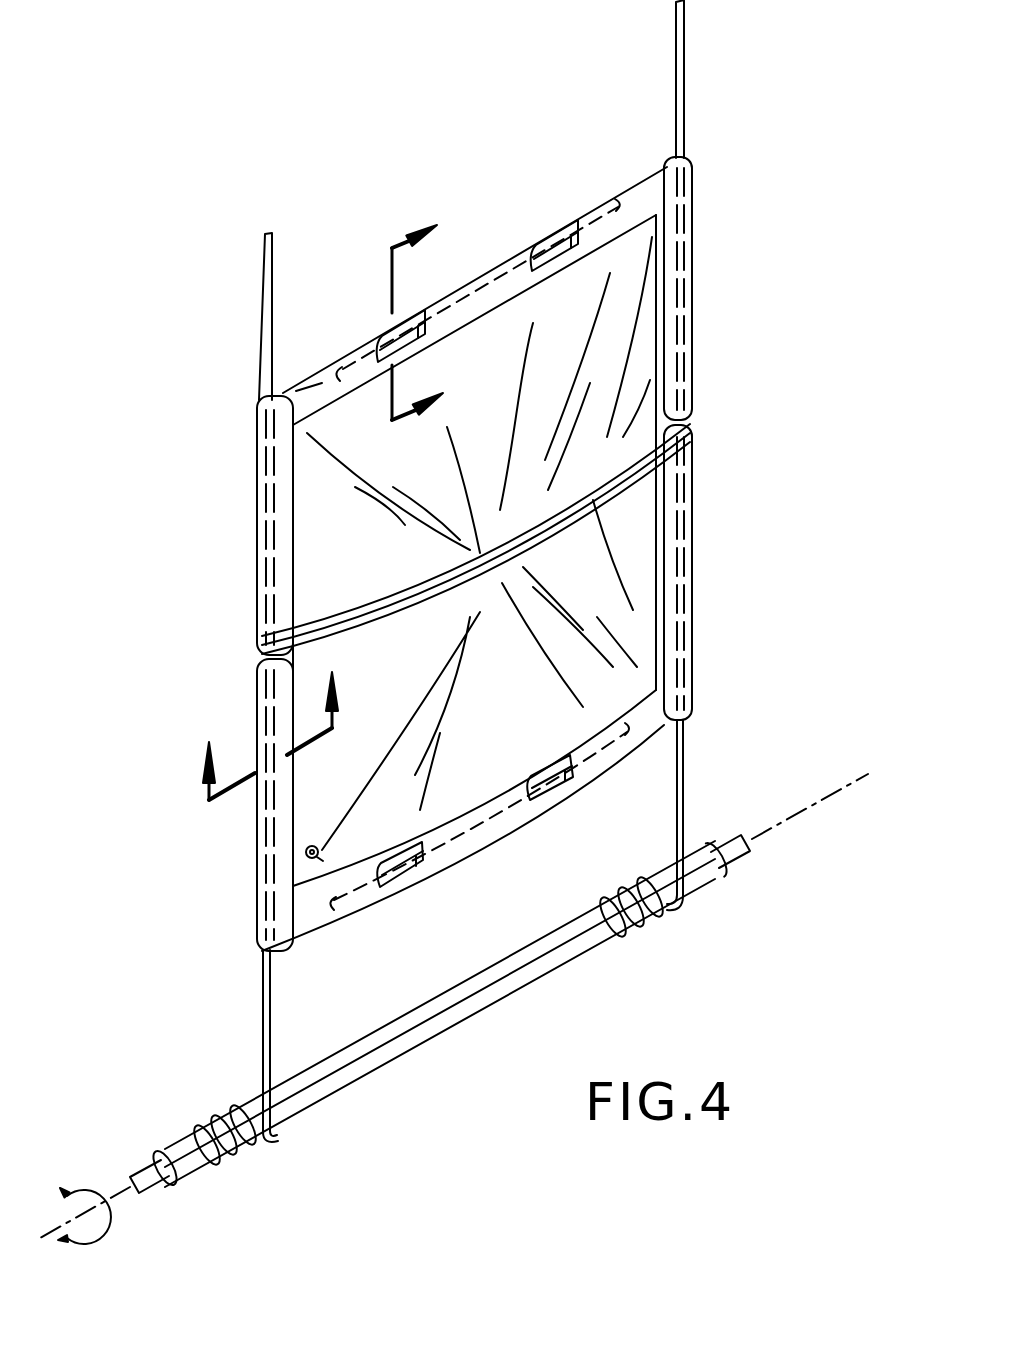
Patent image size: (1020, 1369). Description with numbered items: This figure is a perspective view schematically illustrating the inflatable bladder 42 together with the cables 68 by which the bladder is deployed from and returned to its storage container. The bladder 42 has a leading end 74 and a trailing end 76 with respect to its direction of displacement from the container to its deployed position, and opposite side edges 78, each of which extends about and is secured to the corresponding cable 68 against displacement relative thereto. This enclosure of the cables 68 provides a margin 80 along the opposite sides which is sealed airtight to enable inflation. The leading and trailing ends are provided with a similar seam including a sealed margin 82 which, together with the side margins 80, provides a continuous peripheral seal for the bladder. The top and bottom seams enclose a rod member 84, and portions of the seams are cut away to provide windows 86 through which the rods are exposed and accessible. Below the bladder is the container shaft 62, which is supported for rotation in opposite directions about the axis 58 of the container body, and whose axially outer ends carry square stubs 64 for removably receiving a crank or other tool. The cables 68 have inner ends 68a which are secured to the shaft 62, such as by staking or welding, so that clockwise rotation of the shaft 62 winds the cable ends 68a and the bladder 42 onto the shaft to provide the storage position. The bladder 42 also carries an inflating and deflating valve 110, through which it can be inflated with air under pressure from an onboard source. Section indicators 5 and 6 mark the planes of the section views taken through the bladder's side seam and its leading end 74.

The inflatable bladder 42 is at (713, 195).
The axis 58 is at (832, 788).
The shaft 62 is at (489, 1042).
The square stubs 64 is at (748, 858).
The cables 68 is at (690, 80).
The inner ends 68a is at (652, 908).
The leading end 74 is at (594, 190).
The trailing end 76 is at (512, 840).
The side edges 78 is at (713, 342).
The margin 80 is at (667, 292).
The sealed margin 82 is at (486, 298).
The rod member 84 is at (552, 243).
The windows 86 is at (408, 330).
The inflating and deflating valve 110 is at (290, 865).
The section line 5- 5 is at (272, 723).
The section line 6- 6 is at (417, 316).